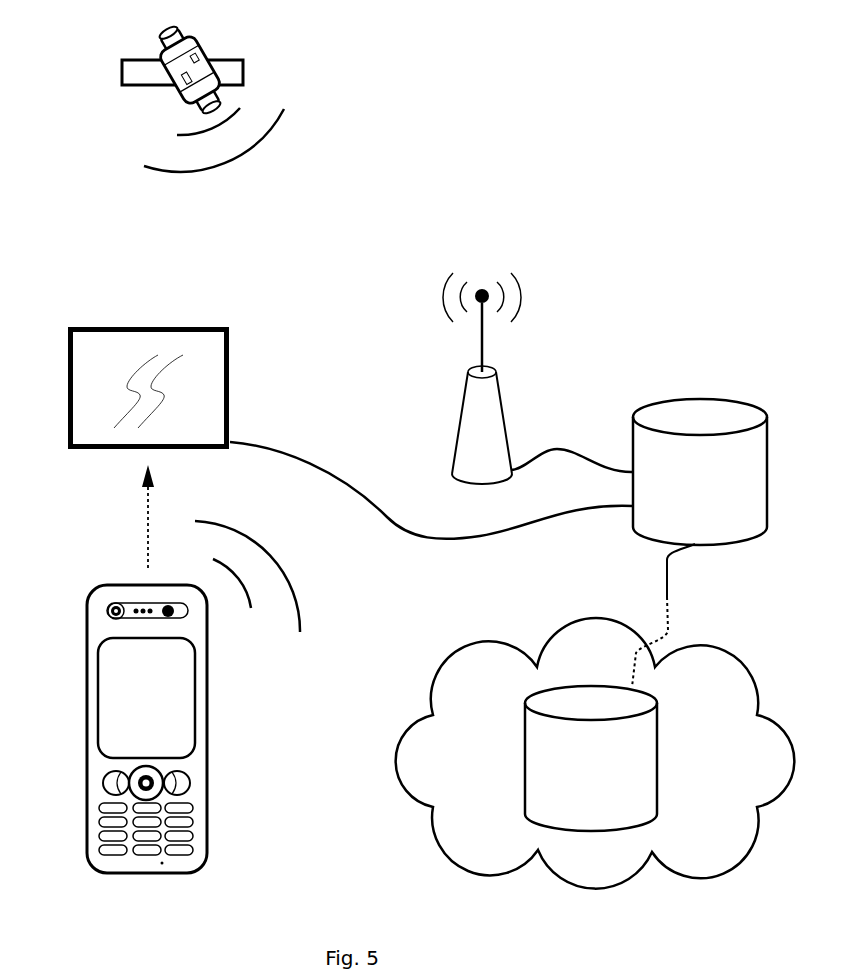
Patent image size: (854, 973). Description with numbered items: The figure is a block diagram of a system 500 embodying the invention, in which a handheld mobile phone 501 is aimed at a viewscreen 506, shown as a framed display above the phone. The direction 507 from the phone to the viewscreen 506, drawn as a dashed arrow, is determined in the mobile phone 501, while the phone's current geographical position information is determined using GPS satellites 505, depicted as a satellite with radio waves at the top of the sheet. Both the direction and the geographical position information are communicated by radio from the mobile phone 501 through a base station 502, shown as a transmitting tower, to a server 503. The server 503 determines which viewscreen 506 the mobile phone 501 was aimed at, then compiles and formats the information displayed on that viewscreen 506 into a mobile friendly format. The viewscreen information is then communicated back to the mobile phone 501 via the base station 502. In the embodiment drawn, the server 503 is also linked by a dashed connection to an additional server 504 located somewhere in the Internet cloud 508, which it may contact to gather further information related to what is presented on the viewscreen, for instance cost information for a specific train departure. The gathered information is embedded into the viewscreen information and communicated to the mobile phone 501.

The system 500 is at (590, 187).
The mobile phone 501 is at (207, 830).
The base station 502 is at (462, 471).
The server 503 is at (681, 526).
The additional server 504 is at (572, 815).
The GPS satellites 505 is at (225, 60).
The viewscreen 506 is at (230, 366).
The direction 507 is at (148, 522).
The Internet cloud 508 is at (400, 740).